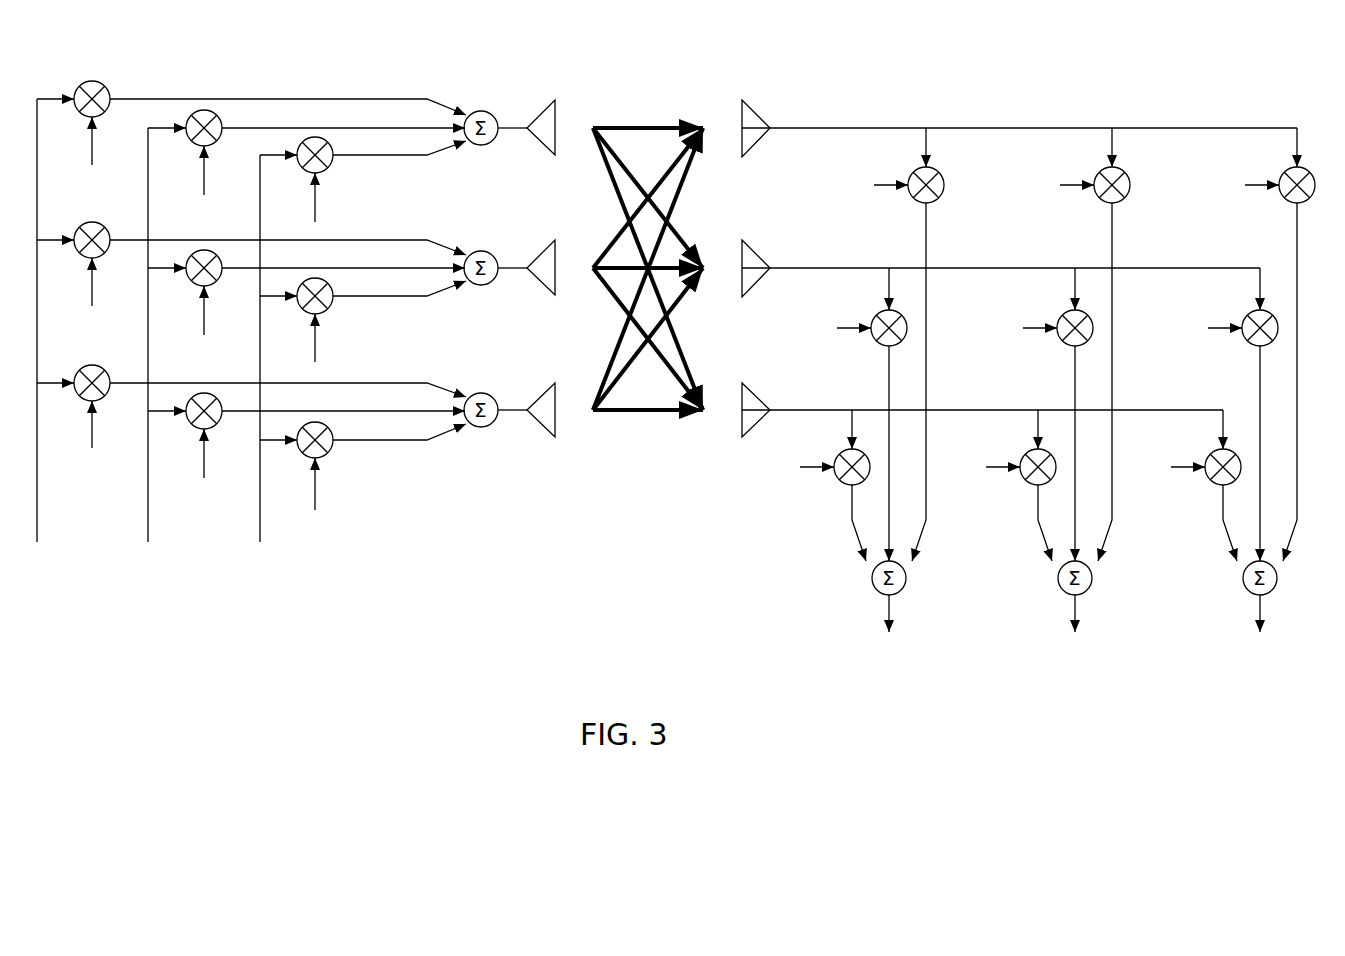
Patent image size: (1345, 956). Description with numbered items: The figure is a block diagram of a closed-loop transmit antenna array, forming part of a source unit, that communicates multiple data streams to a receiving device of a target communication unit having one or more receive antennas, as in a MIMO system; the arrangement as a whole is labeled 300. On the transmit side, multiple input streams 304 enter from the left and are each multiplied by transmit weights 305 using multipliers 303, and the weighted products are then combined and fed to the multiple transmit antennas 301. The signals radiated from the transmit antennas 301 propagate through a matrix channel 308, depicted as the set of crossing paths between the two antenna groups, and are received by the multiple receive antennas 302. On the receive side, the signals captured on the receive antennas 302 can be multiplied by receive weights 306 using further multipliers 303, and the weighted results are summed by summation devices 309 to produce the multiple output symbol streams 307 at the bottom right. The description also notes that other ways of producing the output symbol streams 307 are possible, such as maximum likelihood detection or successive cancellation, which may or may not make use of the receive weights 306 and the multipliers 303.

The MIMO communication system 300 is at (643, 779).
The transmit antennas 301 is at (552, 88).
The receive antennas 302 is at (752, 100).
The multipliers 303 is at (96, 66).
The input streams 304 is at (52, 593).
The transmit weights 305 is at (240, 327).
The receive weights 306 is at (1004, 308).
The output symbol streams 307 is at (880, 673).
The matrix channel 308 is at (628, 111).
The summation devices 309 is at (865, 585).